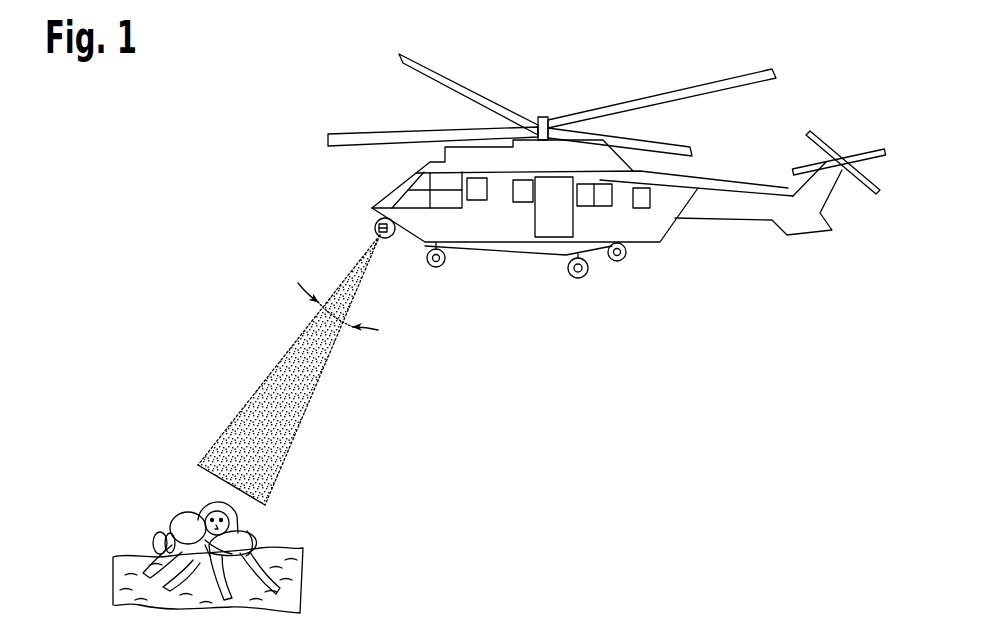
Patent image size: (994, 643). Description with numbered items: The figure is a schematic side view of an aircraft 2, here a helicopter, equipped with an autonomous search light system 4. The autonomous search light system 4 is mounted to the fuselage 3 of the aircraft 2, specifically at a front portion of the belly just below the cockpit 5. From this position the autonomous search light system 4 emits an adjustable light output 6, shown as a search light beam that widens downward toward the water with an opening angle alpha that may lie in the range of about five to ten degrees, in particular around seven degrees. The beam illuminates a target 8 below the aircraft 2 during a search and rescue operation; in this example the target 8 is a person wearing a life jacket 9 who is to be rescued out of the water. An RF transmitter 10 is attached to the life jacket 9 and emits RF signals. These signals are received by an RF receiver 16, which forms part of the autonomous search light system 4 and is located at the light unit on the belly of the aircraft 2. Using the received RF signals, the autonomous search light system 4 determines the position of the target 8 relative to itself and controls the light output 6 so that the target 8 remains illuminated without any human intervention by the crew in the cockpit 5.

The aircraft 2 is at (834, 76).
The fuselage 3 is at (546, 266).
The autonomous search light system 4 is at (368, 222).
The cockpit 5 is at (378, 188).
The adjustable light output 6 is at (236, 384).
The target 8 is at (196, 492).
The life jacket 9 is at (254, 530).
The RF transmitter 10 is at (156, 542).
The RF receiver 16 is at (391, 236).